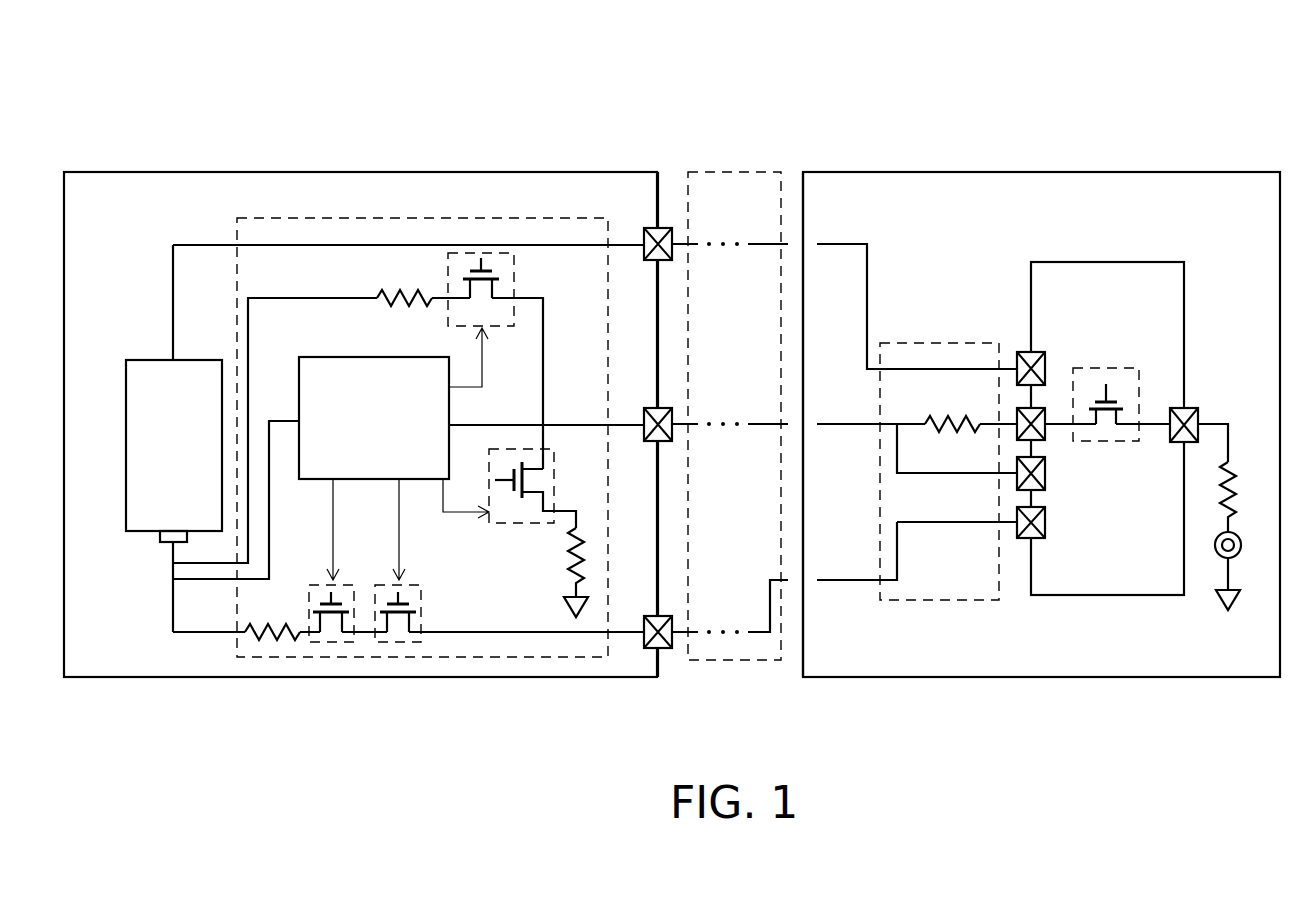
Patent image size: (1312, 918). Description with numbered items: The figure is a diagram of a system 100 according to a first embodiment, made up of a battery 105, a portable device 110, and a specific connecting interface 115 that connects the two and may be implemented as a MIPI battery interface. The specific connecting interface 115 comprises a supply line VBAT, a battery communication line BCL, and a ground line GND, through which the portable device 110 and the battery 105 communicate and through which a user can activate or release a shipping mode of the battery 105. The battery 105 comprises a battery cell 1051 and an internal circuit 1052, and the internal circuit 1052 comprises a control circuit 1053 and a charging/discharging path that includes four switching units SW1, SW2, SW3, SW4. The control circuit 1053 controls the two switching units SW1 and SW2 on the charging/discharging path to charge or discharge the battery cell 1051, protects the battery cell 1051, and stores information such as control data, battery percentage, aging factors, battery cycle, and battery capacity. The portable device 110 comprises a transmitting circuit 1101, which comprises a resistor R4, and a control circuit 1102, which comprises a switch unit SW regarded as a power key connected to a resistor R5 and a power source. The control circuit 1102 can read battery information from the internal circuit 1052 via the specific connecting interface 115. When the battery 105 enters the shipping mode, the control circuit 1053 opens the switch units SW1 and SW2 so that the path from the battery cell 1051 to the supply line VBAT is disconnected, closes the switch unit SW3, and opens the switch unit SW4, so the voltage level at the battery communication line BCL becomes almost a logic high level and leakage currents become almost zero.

The system 100 is at (1160, 60).
The battery 105 is at (378, 172).
The portable device 110 is at (1200, 172).
The specific connecting interface 115 is at (735, 172).
The battery cell 1051 is at (157, 360).
The internal circuit 1052 is at (277, 217).
The control circuit 1053 is at (375, 357).
The transmitting circuit 1101 is at (925, 343).
The control circuit 1102 is at (1117, 262).
The switching unit SW1 is at (331, 644).
The switching unit SW2 is at (397, 644).
The switch unit SW3 is at (534, 282).
The switch unit SW4 is at (531, 524).
The switch unit SW is at (1117, 442).
The resistor R4 is at (952, 412).
The resistor R5 is at (1233, 517).
The ground line GND is at (666, 228).
The battery communication line BCL is at (667, 442).
The supply line VBAT is at (666, 650).